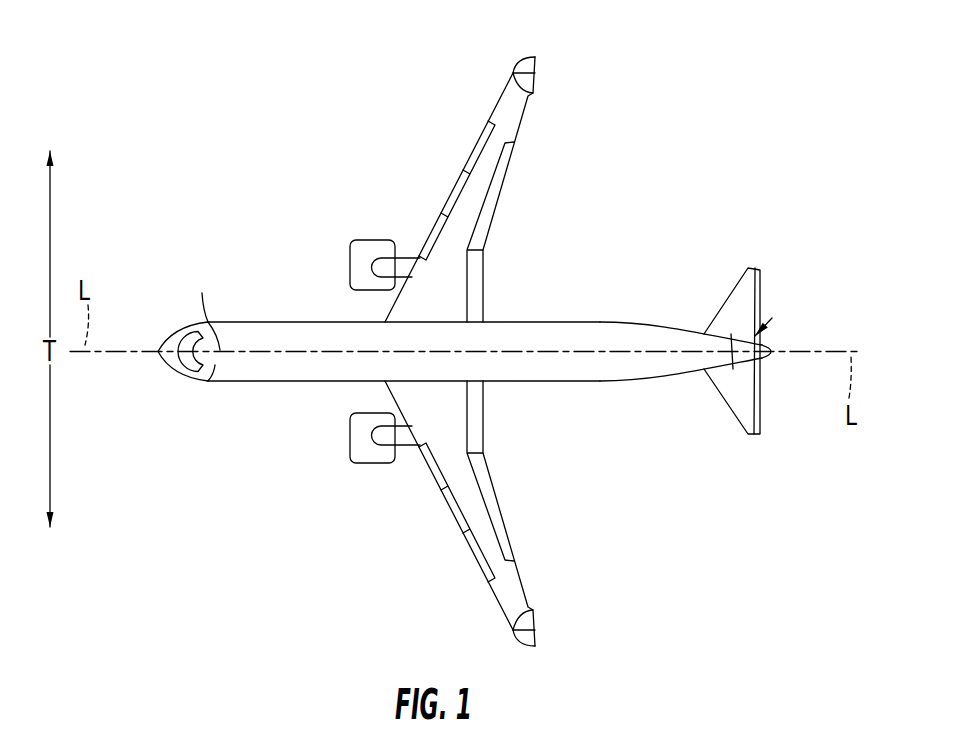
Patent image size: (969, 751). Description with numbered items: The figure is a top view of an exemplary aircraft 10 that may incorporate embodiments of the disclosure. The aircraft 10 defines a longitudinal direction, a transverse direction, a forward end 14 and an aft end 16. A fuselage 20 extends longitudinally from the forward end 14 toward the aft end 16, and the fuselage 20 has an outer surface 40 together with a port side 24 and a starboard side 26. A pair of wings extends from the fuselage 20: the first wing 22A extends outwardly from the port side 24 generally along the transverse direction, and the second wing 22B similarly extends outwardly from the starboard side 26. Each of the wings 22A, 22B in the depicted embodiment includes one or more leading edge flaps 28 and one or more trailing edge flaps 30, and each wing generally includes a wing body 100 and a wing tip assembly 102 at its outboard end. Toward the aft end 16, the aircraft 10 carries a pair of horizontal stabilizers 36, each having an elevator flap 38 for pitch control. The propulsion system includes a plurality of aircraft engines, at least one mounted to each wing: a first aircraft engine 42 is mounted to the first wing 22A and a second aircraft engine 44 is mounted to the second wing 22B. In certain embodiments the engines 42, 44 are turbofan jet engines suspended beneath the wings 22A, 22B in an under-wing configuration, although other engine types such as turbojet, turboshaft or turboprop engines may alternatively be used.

The aircraft 10 is at (468, 354).
The forward end 14 is at (167, 368).
The aft end 16 is at (766, 377).
The fuselage 20 is at (209, 382).
The first wing 22A is at (490, 547).
The second wing 22B is at (470, 208).
The port side 24 is at (277, 383).
The starboard side 26 is at (278, 321).
The leading edge flap 28 is at (453, 513).
The trailing edge flap 30 is at (513, 515).
The horizontal stabilizer 36 is at (740, 290).
The elevator flap 38 is at (758, 291).
The outer surface 40 is at (577, 353).
The first aircraft engine 42 is at (367, 471).
The second aircraft engine 44 is at (372, 233).
The wing body 100 is at (517, 93).
The wing tip assembly 102 is at (525, 54).